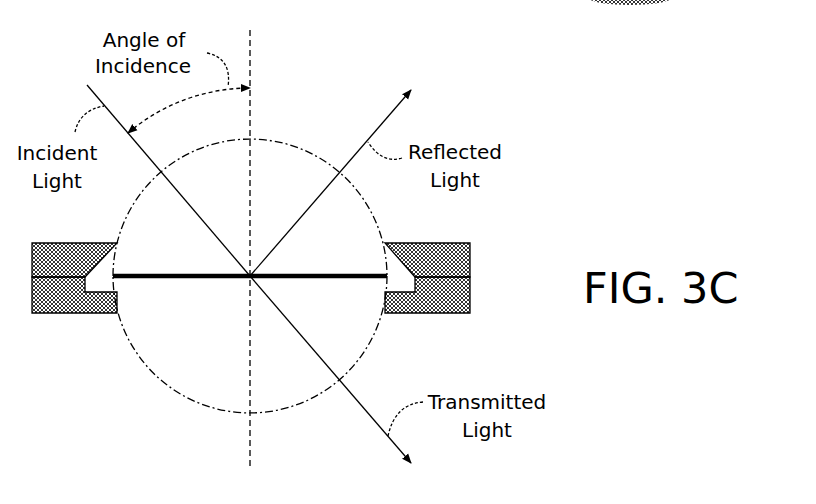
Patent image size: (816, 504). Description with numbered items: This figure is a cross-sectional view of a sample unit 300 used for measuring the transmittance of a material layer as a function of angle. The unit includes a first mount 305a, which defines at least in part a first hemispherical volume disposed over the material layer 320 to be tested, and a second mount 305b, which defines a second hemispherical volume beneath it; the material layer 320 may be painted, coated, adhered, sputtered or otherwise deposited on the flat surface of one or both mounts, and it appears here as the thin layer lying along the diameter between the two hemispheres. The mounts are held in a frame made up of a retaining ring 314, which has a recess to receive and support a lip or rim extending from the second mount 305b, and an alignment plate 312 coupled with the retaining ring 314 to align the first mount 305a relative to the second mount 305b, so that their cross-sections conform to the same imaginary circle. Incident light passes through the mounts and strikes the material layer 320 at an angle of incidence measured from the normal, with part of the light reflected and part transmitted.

The sample unit 300 is at (612, 145).
The first mount 305a is at (250, 207).
The second mount 305b is at (250, 344).
The alignment plate 312 is at (470, 247).
The retaining ring 314 is at (442, 313).
The material layer 320 is at (178, 287).